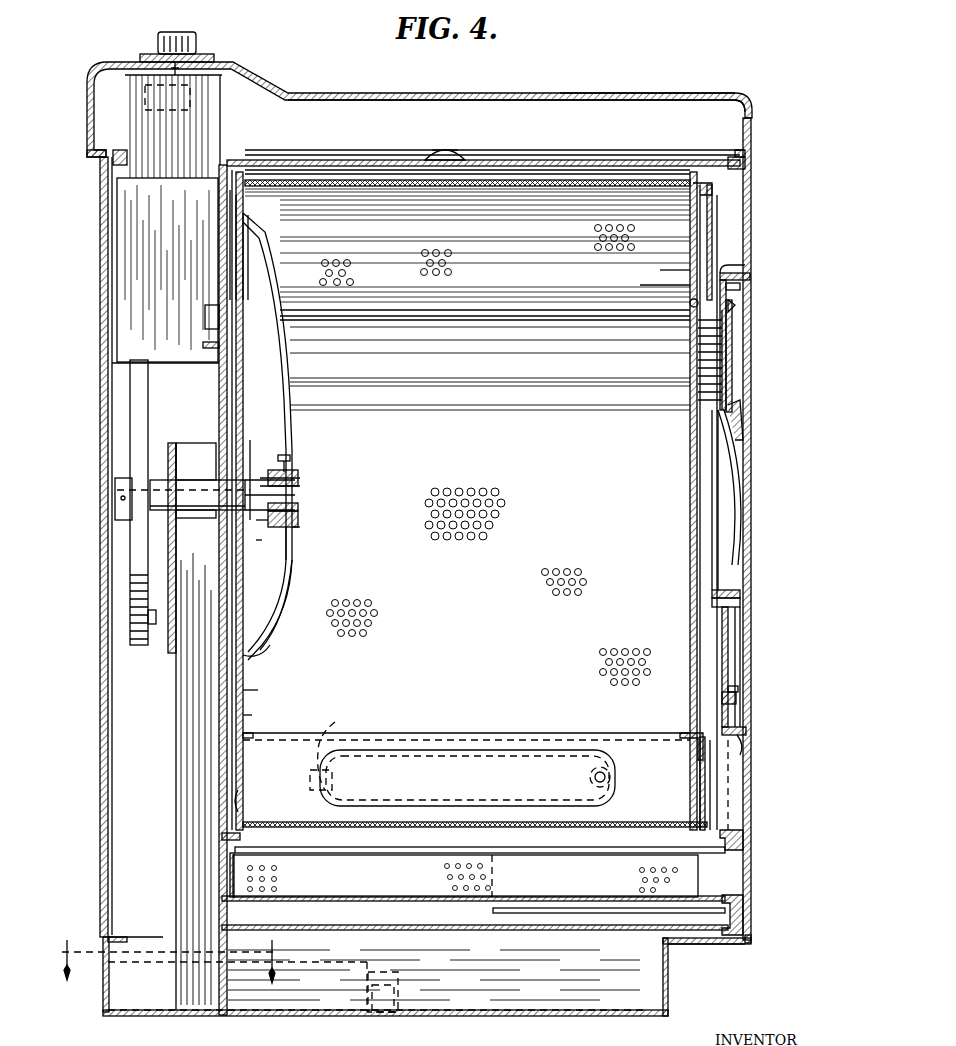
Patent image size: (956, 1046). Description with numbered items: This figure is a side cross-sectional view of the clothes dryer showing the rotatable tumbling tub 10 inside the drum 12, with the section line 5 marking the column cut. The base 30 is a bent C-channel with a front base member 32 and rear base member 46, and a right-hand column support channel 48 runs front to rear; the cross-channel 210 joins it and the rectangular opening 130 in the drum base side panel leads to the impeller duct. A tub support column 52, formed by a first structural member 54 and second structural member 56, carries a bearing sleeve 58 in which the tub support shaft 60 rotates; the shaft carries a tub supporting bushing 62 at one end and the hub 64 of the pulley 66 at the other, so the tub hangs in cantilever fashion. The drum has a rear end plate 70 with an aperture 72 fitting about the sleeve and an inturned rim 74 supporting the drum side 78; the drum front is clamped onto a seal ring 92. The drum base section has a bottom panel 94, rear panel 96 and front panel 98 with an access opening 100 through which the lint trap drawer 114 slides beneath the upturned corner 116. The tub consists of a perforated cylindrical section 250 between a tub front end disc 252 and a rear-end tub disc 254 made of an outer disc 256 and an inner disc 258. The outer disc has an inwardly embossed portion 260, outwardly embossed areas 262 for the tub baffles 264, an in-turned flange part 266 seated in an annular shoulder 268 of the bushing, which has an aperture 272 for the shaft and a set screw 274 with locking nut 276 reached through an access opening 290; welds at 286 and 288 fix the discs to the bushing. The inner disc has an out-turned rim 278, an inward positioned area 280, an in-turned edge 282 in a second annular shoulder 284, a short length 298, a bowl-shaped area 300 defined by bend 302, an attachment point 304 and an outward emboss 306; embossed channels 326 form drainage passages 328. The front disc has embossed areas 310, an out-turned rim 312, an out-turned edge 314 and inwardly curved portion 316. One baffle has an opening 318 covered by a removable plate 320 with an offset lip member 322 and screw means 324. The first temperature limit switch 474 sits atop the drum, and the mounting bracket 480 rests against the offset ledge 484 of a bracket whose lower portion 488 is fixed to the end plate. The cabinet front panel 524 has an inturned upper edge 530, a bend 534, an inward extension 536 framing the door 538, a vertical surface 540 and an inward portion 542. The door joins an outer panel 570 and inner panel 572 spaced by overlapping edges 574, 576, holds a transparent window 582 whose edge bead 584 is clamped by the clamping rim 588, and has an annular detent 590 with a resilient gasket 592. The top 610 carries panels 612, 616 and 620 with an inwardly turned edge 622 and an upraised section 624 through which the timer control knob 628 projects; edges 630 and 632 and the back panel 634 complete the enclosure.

The section line 5- 5 is at (169, 958).
The tumbling tub 10 is at (652, 440).
The drum 12 is at (650, 172).
The base 30 is at (695, 1013).
The front base member 32 is at (660, 990).
The rear base member 46 is at (103, 990).
The right-hand column support channel 48 is at (503, 1020).
The tub support column 52 is at (180, 662).
The first structural member 54 is at (210, 697).
The second structural member 56 is at (175, 748).
The bearing sleeve 58 is at (192, 480).
The tub support shaft 60 is at (296, 512).
The tub supporting bushing 62 is at (288, 550).
The hub 64 is at (122, 518).
The pulley 66 is at (130, 566).
The rear end plate 70 is at (218, 396).
The aperture 72 is at (238, 445).
The inturned rim 74 is at (240, 167).
The drum side 78 is at (522, 160).
The seal ring 92 is at (748, 205).
The bottom panel 94 is at (452, 930).
The rear panel 96 is at (227, 915).
The front panel 98 is at (705, 940).
The access opening 100 is at (735, 900).
The lint trap drawer 114 is at (430, 892).
The upturned corner 116 is at (725, 837).
The rectangular opening 130 is at (568, 920).
The cross-channel 210 is at (398, 980).
The perforated cylindrical section 250 is at (395, 182).
The tub front end disc 252 is at (695, 265).
The rear-end tub disc 254 is at (288, 268).
The outer disc 256 is at (250, 258).
The inner disc 258 is at (278, 296).
The inwardly embossed portion 260 is at (300, 412).
The outwardly embossed areas 262 is at (262, 700).
The tub baffles 264 is at (540, 400).
The in-turned flange part 266 is at (245, 497).
The annular shoulder 268 is at (252, 545).
The aperture 272 is at (250, 522).
The set screw 274 is at (298, 468).
The locking nut 276 is at (286, 460).
The out-turned rim 278 is at (238, 795).
The inward positioned area 280 is at (300, 490).
The in-turned edge 282 is at (298, 504).
The annular shoulder 284 is at (292, 530).
The fillet welds 286 is at (300, 484).
The spot welds 288 is at (220, 542).
The access opening 290 is at (270, 444).
The short length 298 is at (240, 240).
The bowl-shaped area 300 is at (262, 635).
The bend 302 is at (252, 660).
The attachment point 304 is at (258, 690).
The outward emboss 306 is at (250, 735).
The outwardly embossed areas 310 is at (680, 740).
The out-turned rim 312 is at (700, 190).
The out-turned edge 314 is at (690, 285).
The inwardly curved portion 316 is at (690, 308).
The opening 318 is at (560, 730).
The removable plate 320 is at (445, 770).
The offset lip member 322 is at (335, 722).
The screw means 324 is at (605, 778).
The outwardly embossed channels 326 is at (240, 213).
The drainage passages 328 is at (230, 200).
The first temperature limit switch 474 is at (448, 150).
The mounting bracket 480 is at (218, 293).
The offset ledge 484 is at (207, 328).
The lower portion 488 is at (205, 342).
The front panel 524 is at (750, 275).
The inturned upper edge 530 is at (750, 170).
The bend 534 is at (735, 283).
The inward extension 536 is at (735, 265).
The door 538 is at (752, 391).
The vertical surface 540 is at (735, 308).
The inward portion 542 is at (722, 335).
The outer panel 570 is at (742, 650).
The inner panel 572 is at (728, 658).
The overlapping edge 574 is at (745, 728).
The overlapping edge 576 is at (745, 750).
The transparent window 582 is at (735, 490).
The edge bead 584 is at (740, 592).
The clamping rim 588 is at (742, 600).
The annular detent 590 is at (735, 700).
The resilient gasket 592 is at (735, 690).
The top 610 is at (560, 90).
The top panel 612 is at (655, 90).
The front panel 616 is at (748, 100).
The rear panel 620 is at (90, 80).
The inwardly turned edge 622 is at (740, 157).
The upraised section 624 is at (235, 65).
The timer control knob 628 is at (193, 35).
The rear flange 630 is at (740, 150).
The front inner wall 632 is at (112, 180).
The back panel 634 is at (100, 390).